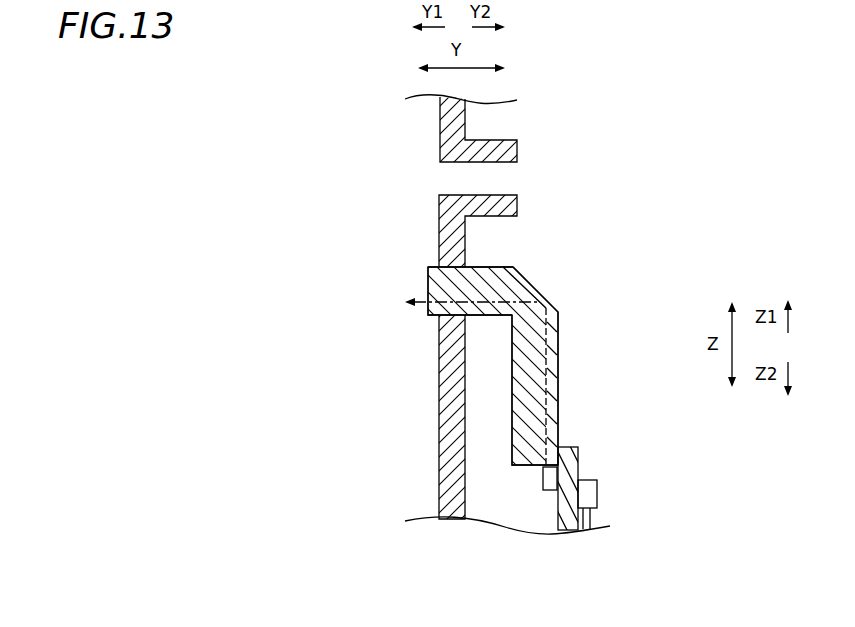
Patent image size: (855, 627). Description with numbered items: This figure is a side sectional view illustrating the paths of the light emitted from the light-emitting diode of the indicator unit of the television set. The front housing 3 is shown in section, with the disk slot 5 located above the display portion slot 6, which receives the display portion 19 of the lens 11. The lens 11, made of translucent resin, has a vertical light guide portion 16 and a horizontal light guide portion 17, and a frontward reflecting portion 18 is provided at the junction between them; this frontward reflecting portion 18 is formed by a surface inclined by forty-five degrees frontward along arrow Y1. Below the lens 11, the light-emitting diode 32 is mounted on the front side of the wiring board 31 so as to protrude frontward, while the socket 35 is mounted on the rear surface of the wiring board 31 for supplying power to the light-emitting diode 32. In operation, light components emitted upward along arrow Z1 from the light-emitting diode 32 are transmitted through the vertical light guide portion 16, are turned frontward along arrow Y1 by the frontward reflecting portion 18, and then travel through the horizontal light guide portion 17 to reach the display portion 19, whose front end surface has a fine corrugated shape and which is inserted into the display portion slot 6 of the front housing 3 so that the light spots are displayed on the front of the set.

The front housing 3 is at (439, 450).
The disk slot 5 is at (468, 162).
The display portion slot 6 is at (477, 307).
The lens 11 is at (477, 307).
The vertical light guide portion 16 is at (559, 345).
The horizontal light guide portion 17 is at (497, 278).
The frontward reflecting portion 18 is at (533, 287).
The display portion 19 is at (427, 297).
The wiring board 31 is at (570, 447).
The light-emitting diode 32 is at (548, 487).
The socket 35 is at (588, 490).